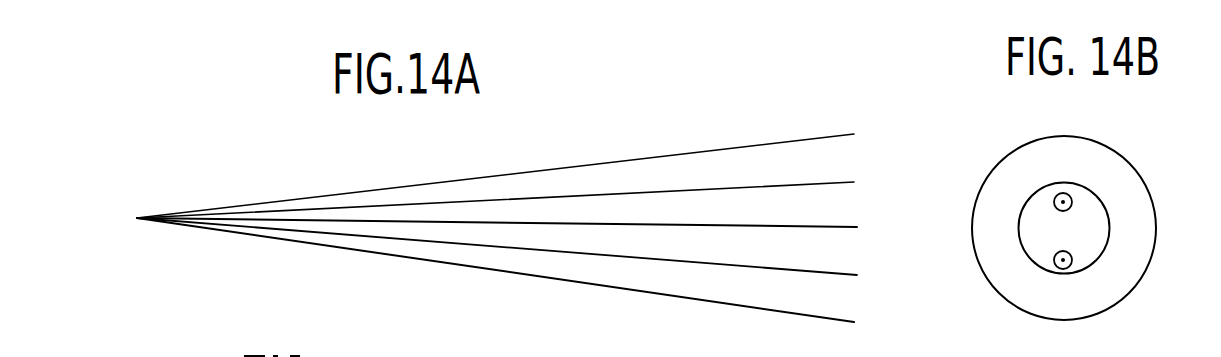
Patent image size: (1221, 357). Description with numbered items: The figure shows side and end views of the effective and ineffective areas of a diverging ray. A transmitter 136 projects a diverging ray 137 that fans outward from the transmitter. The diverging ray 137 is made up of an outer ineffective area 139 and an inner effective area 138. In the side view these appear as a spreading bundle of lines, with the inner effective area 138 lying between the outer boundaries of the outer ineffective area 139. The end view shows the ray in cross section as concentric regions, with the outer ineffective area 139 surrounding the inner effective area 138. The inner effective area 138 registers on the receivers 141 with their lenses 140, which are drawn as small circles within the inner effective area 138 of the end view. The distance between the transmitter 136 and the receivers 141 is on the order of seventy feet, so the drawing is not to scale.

In FIG. 14A, the transmitter 136 is at (119, 212).
In FIG. 14A, the diverging ray 137 is at (506, 175).
In FIG. 14A, the inner effective area 138 is at (562, 210).
In FIG. 14B, the inner effective area 138 is at (1098, 193).
In FIG. 14A, the outer ineffective area 139 is at (675, 167).
In FIG. 14B, the outer ineffective area 139 is at (1060, 137).
In FIG. 14B, the lens 140 is at (1073, 261).
In FIG. 14B, the receiver 141 is at (1067, 263).